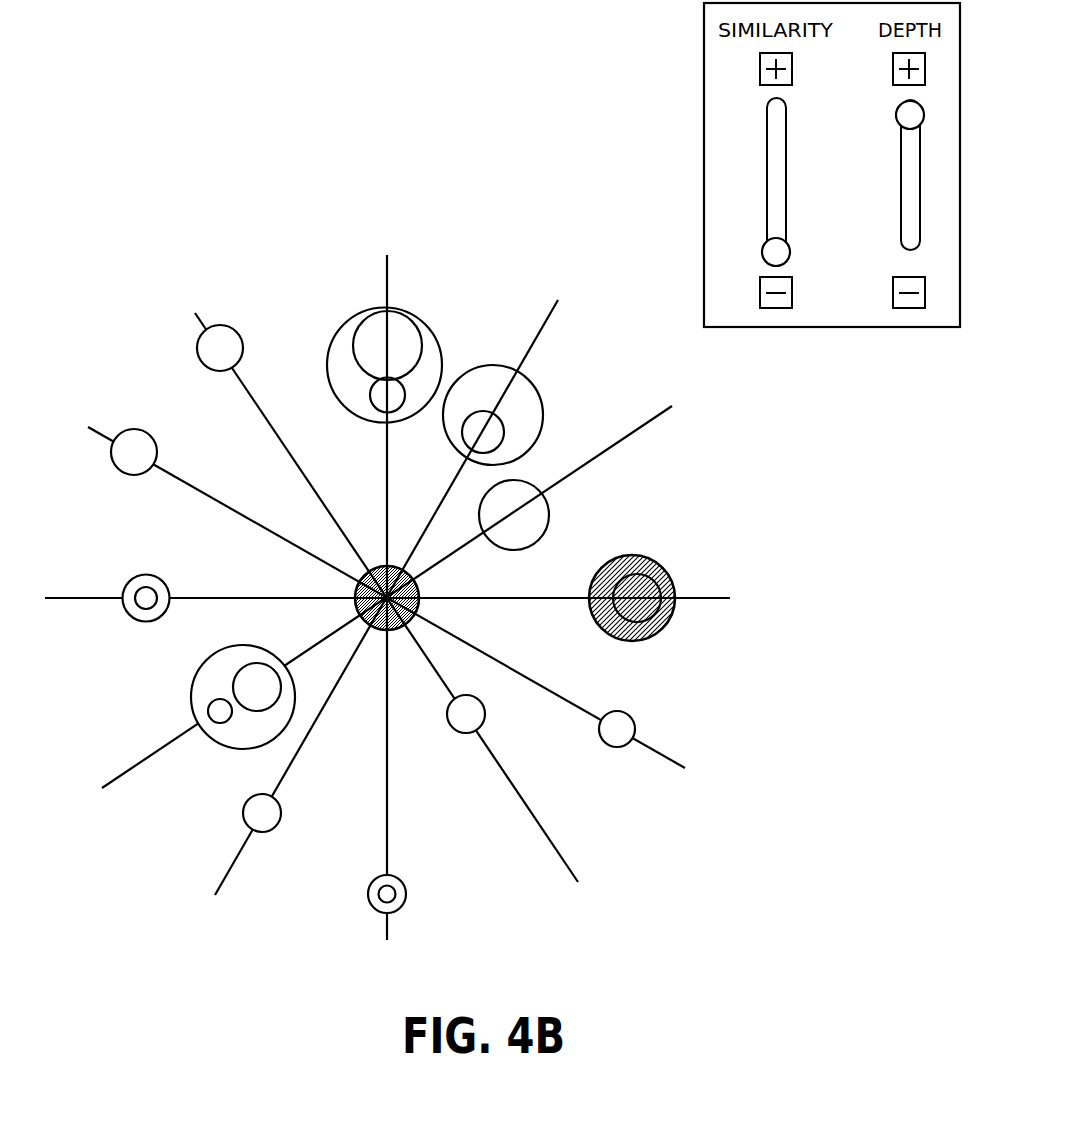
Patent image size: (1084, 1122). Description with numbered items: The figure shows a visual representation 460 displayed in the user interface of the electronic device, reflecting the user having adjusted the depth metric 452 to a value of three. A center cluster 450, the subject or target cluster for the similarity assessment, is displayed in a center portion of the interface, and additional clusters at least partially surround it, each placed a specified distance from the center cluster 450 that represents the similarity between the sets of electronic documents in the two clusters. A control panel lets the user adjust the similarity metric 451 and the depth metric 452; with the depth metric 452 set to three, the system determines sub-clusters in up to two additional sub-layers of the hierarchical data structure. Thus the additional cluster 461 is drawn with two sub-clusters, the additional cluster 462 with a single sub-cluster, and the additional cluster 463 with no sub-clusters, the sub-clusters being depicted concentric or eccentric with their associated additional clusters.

The center cluster 450 is at (380, 566).
The similarity metric 451 is at (767, 145).
The depth metric 452 is at (901, 178).
The visual representation 460 is at (383, 98).
The additional cluster 461 is at (368, 308).
The additional cluster 462 is at (490, 366).
The additional cluster 463 is at (548, 507).